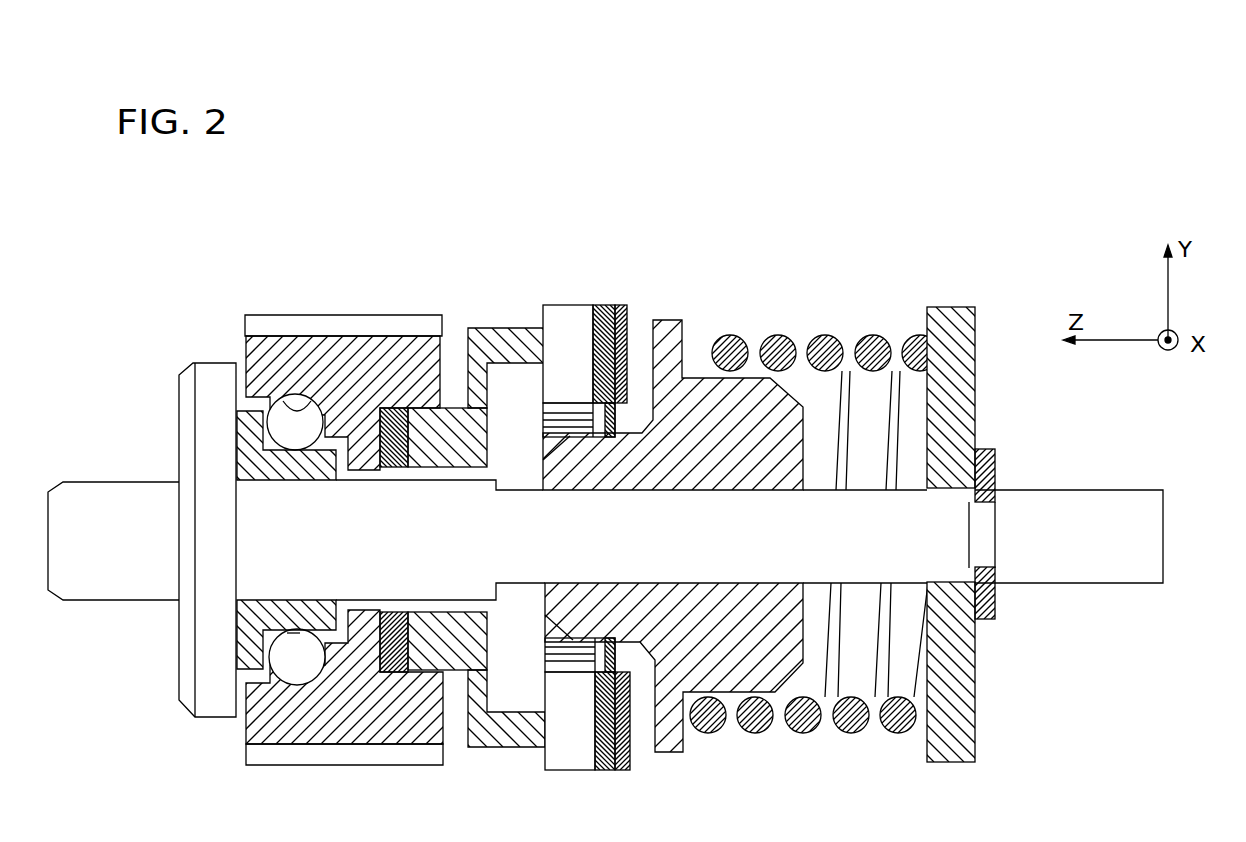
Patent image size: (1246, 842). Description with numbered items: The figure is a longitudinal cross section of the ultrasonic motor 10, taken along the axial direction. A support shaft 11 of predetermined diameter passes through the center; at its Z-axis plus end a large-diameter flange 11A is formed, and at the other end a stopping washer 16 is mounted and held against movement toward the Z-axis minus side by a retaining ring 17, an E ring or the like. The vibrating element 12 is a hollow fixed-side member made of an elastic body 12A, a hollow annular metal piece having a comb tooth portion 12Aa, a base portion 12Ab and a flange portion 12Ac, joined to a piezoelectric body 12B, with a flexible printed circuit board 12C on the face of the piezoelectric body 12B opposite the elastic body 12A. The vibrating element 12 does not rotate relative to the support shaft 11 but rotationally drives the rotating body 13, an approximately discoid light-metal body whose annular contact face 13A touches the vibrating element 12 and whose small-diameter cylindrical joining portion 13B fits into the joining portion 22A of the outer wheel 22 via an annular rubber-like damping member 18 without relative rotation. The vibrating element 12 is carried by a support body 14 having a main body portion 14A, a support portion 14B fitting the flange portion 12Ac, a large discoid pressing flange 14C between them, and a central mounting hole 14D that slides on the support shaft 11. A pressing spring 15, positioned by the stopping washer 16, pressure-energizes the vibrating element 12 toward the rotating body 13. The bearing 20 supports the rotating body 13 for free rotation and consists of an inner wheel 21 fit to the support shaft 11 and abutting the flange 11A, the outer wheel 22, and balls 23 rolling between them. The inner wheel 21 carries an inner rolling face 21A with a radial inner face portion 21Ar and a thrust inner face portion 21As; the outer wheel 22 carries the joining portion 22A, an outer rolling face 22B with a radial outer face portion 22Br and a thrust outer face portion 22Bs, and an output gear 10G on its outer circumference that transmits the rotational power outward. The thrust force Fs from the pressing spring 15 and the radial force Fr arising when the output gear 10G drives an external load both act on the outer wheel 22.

The ultrasonic motor 10 is at (545, 178).
The output gear 10G is at (337, 303).
The support shaft 11 is at (88, 610).
The flange 11A is at (210, 719).
The vibrating element 12 is at (748, 192).
The elastic body 12A is at (668, 232).
The comb tooth portion 12Aa is at (563, 313).
The base portion 12Ab is at (608, 403).
The flange portion 12Ac is at (580, 410).
The piezoelectric body 12B is at (612, 308).
The flexible printed circuit board 12C is at (624, 308).
The rotating body 13 is at (505, 256).
The contact face 13A is at (540, 327).
The joining portion 13B is at (476, 329).
The support body 14 is at (860, 287).
The main body portion 14A is at (803, 405).
The support portion 14B is at (682, 330).
The pressing flange 14C is at (690, 378).
The mounting hole 14D is at (735, 498).
The pressing spring 15 is at (888, 315).
The stopping washer 16 is at (975, 318).
The retaining ring 17 is at (996, 460).
The damping member 18 is at (393, 406).
The bearing 20 is at (83, 257).
The inner wheel 21 is at (228, 396).
The inner rolling face 21A is at (83, 388).
The thrust inner face portion 21As is at (285, 422).
The radial inner face portion 21Ar is at (295, 440).
The outer wheel 22 is at (231, 347).
The joining portion 22A is at (447, 406).
The outer rolling face 22B is at (197, 232).
The radial outer face portion 22Br is at (283, 400).
The thrust outer face portion 22Bs is at (278, 414).
The ball 23 is at (270, 412).
The thrust force Fs is at (295, 383).
The radial force Fr is at (336, 421).